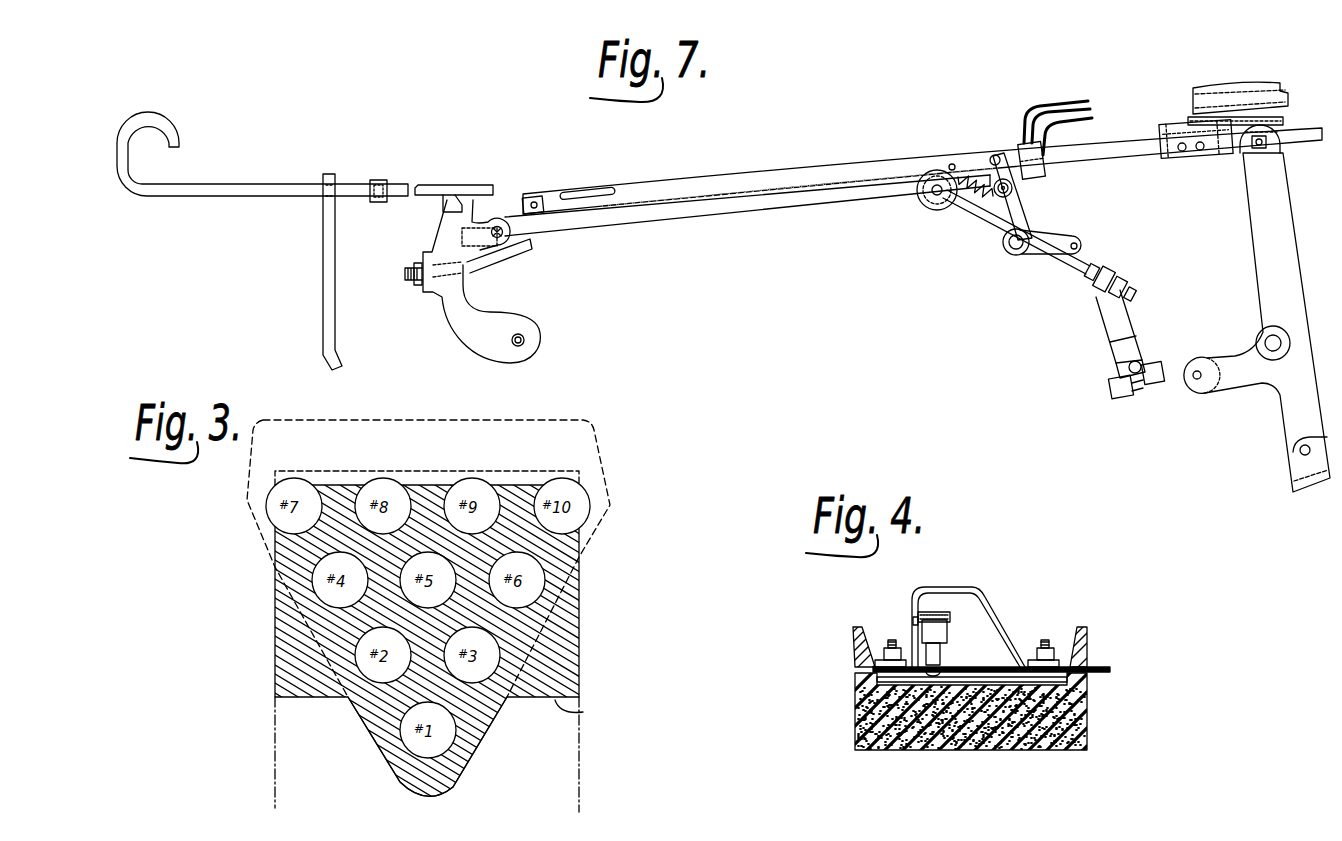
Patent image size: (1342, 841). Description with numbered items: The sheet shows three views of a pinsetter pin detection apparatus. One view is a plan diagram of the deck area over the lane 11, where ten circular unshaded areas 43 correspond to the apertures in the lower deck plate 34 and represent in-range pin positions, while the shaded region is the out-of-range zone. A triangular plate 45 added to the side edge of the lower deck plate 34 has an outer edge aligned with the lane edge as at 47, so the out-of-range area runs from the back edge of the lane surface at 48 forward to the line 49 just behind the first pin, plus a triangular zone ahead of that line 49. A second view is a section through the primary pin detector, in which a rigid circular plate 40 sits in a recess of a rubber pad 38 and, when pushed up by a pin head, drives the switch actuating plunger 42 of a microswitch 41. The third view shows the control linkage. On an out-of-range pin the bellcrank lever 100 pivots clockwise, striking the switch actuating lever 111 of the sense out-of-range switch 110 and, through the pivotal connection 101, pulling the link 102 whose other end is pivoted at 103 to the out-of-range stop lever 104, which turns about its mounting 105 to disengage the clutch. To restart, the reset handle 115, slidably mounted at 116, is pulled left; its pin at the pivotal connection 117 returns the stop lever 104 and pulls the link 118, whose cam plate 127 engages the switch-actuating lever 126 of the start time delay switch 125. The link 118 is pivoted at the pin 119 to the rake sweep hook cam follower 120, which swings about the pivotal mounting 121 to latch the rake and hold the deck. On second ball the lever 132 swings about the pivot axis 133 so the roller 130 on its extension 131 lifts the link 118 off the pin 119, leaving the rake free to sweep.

In FIG. 7, the reset handle 115 is at (233, 189).
In FIG. 7, the slidable mounting 116 is at (327, 174).
In FIG. 7, the out-of-range stop lever 104 is at (447, 231).
In FIG. 7, the pivotal connection 103 is at (499, 228).
In FIG. 7, the pivotal connection pin 117 is at (537, 199).
In FIG. 7, the link 118 is at (676, 184).
In FIG. 7, the link 102 is at (712, 207).
In FIG. 7, the mounting 105 is at (528, 340).
In FIG. 7, the roller 130 is at (926, 206).
In FIG. 7, the out-of-range bellcrank lever 100 is at (993, 221).
In FIG. 7, the pivotal connection 101 is at (992, 152).
In FIG. 7, the sense out-of-range switch 110 is at (1053, 157).
In FIG. 7, the switch actuating lever 111 is at (1020, 186).
In FIG. 7, the extension 131 is at (1071, 270).
In FIG. 7, the lever 132 is at (1113, 318).
In FIG. 7, the pivot axis 133 is at (1132, 366).
In FIG. 7, the pivotal mounting 121 is at (1270, 342).
In FIG. 7, the rake sweep hook cam follower 120 is at (1293, 413).
In FIG. 7, the pivot pin 119 is at (1265, 148).
In FIG. 7, the start time delay switch 125 is at (1258, 115).
In FIG. 7, the switch-actuating lever 126 is at (1190, 117).
In FIG. 7, the cam plate 127 is at (1170, 127).
In FIG. 3, the back edge of the lane surface 48 is at (440, 485).
In FIG. 3, the lower deck plate 34 is at (583, 555).
In FIG. 3, the triangular plate 45 is at (570, 678).
In FIG. 3, the line 49 is at (583, 712).
In FIG. 3, the circular unshaded areas 43 is at (458, 739).
In FIG. 3, the outer edge 47 is at (580, 750).
In FIG. 3, the lane 11 is at (535, 788).
In FIG. 4, the rubber pad 38 is at (1087, 708).
In FIG. 4, the circular plate 40 is at (990, 680).
In FIG. 4, the microswitch 41 is at (947, 630).
In FIG. 4, the switch actuating plunger 42 is at (950, 668).